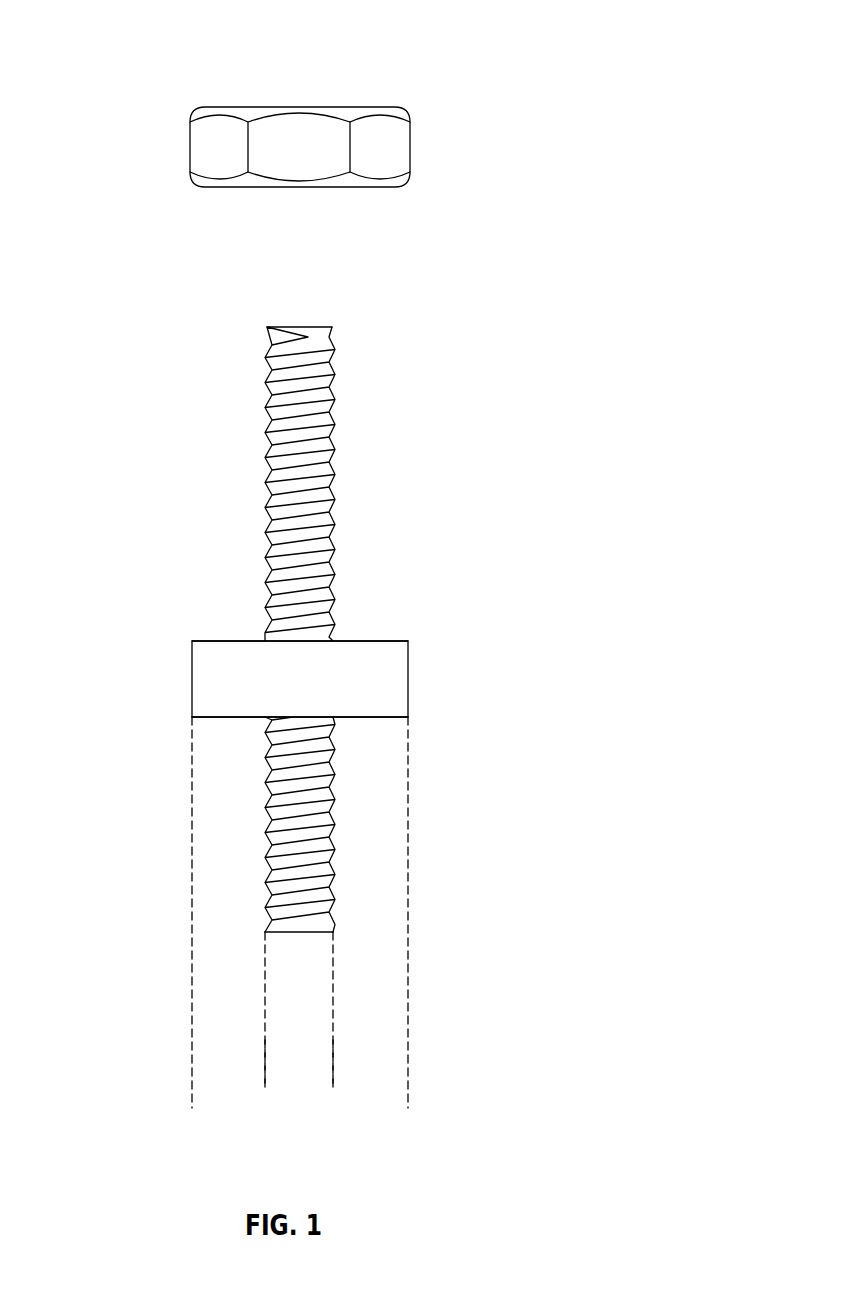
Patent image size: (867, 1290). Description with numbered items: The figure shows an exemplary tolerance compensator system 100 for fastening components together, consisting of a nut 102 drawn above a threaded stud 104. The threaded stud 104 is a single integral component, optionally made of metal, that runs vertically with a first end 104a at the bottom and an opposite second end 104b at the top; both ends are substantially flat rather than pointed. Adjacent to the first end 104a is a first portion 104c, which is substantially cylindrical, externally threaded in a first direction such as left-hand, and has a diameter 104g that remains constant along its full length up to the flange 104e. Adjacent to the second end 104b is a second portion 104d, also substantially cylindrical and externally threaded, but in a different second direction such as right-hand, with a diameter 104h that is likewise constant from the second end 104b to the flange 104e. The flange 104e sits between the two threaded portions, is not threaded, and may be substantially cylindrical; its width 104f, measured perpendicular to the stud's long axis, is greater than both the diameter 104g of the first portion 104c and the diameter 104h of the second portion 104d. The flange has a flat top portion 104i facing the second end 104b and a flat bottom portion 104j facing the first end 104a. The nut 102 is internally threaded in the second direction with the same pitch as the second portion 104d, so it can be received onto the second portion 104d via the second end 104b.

The tolerance compensator system 100 is at (452, 38).
The nut 102 is at (410, 146).
The threaded stud 104 is at (400, 377).
The first end 104a is at (295, 932).
The second end 104b is at (302, 326).
The first portion 104c is at (177, 717).
The second portion 104d is at (177, 325).
The flange 104e is at (437, 641).
The width of flange 104f is at (408, 1105).
The diameter of first portion 104g is at (333, 1006).
The diameter of second portion 104h is at (333, 1058).
The top portion of flange 104i is at (382, 640).
The bottom portion of flange 104j is at (360, 717).